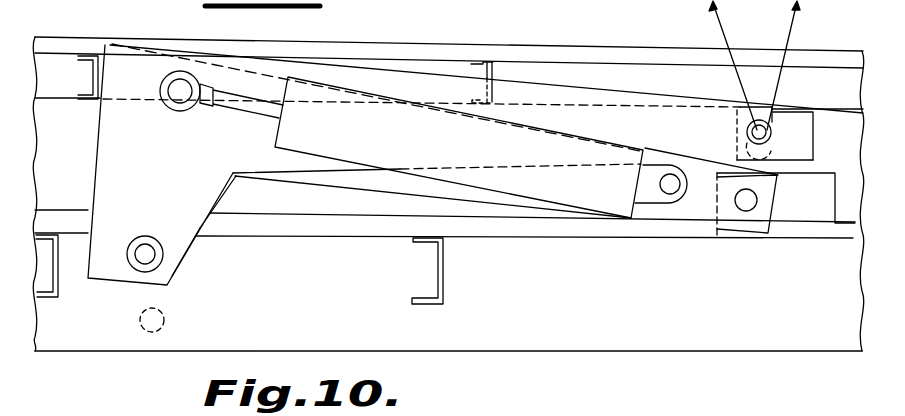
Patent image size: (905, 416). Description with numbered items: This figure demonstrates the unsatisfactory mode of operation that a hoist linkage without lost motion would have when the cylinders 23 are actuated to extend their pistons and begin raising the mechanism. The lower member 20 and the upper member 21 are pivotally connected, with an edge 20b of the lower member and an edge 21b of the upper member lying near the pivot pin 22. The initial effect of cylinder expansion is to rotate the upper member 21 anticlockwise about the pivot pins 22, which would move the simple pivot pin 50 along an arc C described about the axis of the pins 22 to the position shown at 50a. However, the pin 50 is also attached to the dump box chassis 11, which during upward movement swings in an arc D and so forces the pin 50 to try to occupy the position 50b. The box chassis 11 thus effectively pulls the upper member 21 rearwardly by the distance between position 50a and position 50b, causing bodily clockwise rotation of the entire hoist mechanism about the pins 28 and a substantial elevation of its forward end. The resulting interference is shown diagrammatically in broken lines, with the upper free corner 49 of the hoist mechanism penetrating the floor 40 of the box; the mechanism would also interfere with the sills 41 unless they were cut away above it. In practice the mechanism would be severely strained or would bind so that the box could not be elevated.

The dump box chassis 11 is at (458, 13).
The lower member 20 is at (384, 176).
The edge of lower member 20b is at (227, 193).
The upper member 21 is at (554, 95).
The edge of upper member 21b is at (182, 237).
The pivot pin 22 is at (147, 272).
The cylinder 23 is at (568, 188).
The pin 28 is at (746, 211).
The floor 40 is at (75, 36).
The sill 41 is at (90, 78).
The upper free corner 49 is at (112, 44).
The pivot pin 50 is at (772, 150).
The position of pin 50a is at (745, 133).
The position of pin 50b is at (780, 128).
The arc C is at (714, 16).
The arc D is at (800, 14).